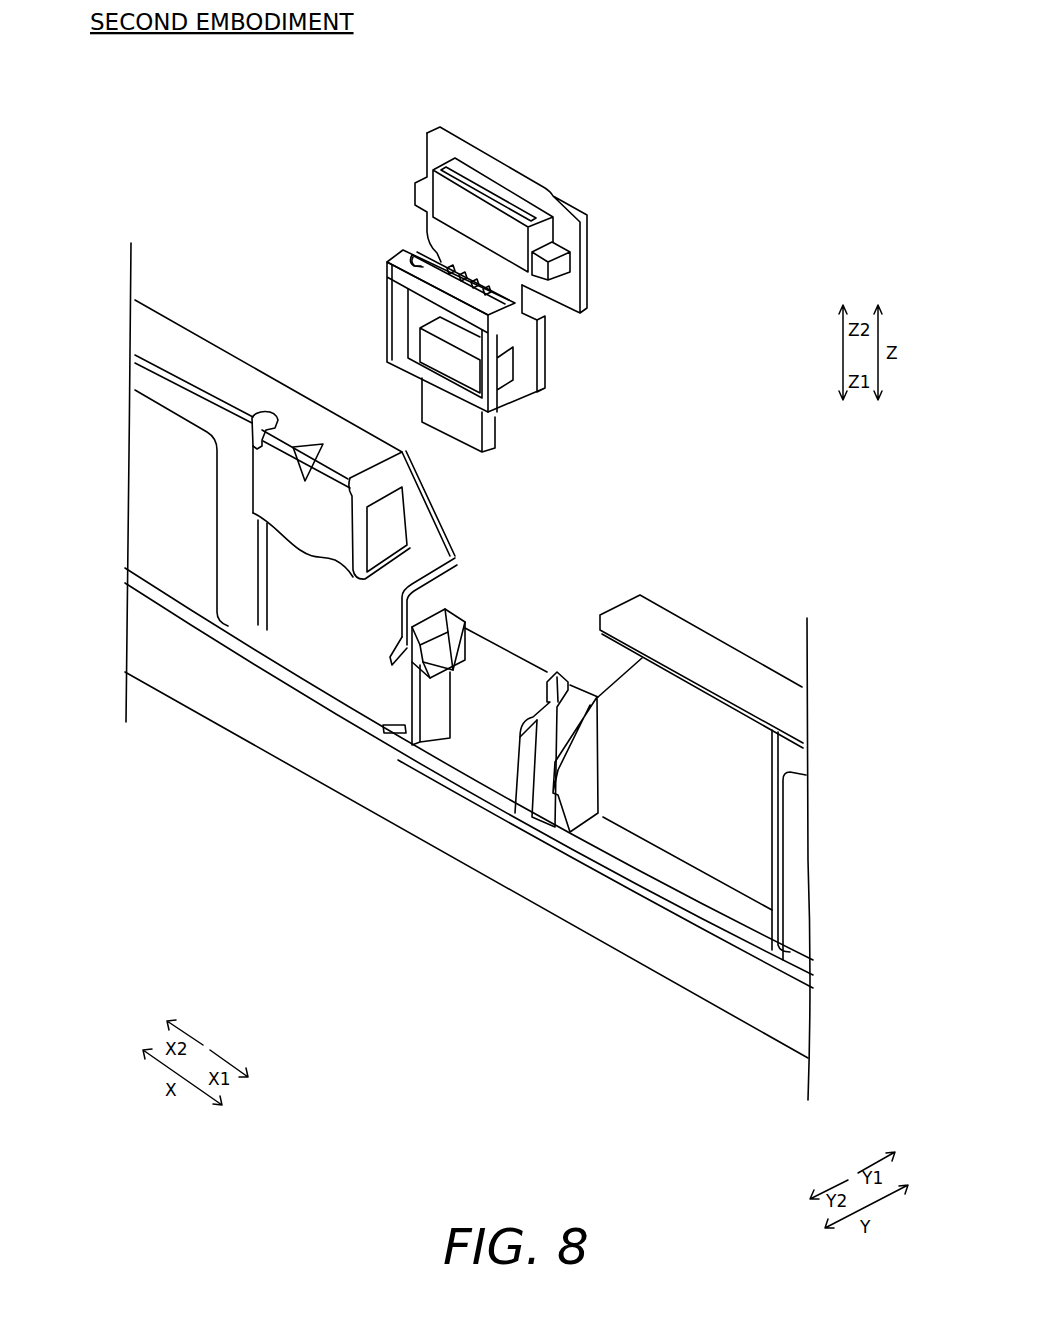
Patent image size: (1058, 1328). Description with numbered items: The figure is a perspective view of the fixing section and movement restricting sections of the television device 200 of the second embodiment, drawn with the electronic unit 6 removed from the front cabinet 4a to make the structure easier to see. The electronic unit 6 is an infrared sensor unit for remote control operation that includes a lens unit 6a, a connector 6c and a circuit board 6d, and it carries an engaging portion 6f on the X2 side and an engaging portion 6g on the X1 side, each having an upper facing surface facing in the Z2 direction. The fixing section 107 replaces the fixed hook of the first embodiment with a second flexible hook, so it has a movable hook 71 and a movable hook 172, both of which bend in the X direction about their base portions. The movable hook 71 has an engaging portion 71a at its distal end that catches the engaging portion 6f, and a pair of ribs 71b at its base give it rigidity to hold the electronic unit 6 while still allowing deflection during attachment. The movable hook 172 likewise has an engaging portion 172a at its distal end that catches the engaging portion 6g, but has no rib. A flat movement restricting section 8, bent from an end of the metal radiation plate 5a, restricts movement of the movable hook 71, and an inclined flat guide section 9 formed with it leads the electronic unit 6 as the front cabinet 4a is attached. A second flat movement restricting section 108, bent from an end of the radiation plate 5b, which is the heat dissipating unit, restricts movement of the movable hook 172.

The television device 200 is at (700, 122).
The electronic unit 6 is at (586, 135).
The lens unit 6a is at (490, 432).
The connector 6c is at (545, 235).
The circuit board 6d is at (585, 265).
The engaging portion 6f is at (437, 253).
The engaging portion 6g is at (540, 312).
The radiation plate 5a is at (318, 381).
The radiation plate 5b is at (659, 574).
The front cabinet 4a is at (552, 936).
The fixing section 107 is at (519, 556).
The movable hook 71 is at (467, 589).
The engaging portion 71a is at (422, 683).
The ribs 71b is at (397, 732).
The movement restricting section 8 is at (403, 598).
The guide section 9 is at (400, 642).
The movable hook 172 is at (559, 641).
The engaging portion 172a is at (520, 733).
The movement restricting section 108 is at (585, 758).